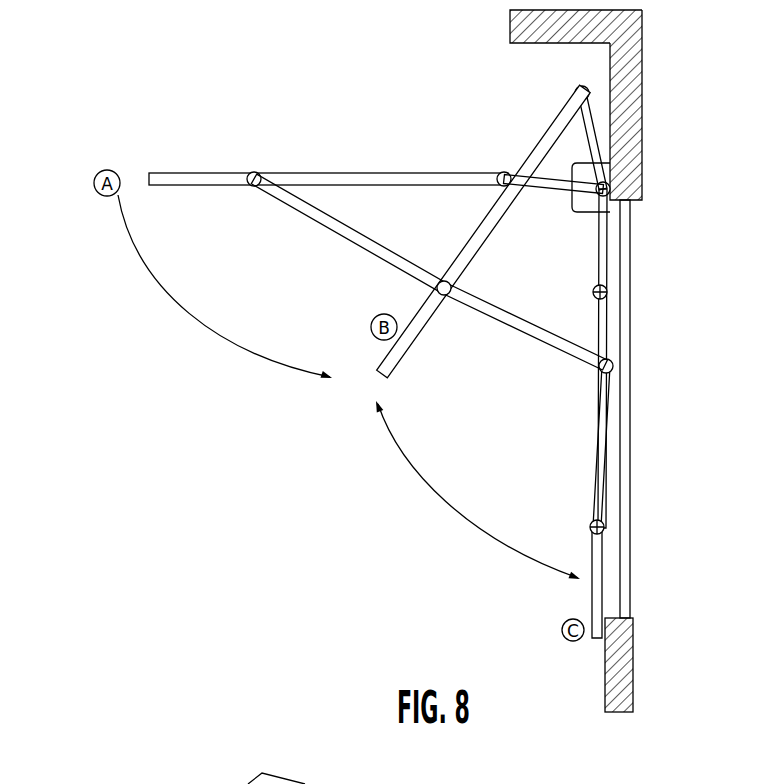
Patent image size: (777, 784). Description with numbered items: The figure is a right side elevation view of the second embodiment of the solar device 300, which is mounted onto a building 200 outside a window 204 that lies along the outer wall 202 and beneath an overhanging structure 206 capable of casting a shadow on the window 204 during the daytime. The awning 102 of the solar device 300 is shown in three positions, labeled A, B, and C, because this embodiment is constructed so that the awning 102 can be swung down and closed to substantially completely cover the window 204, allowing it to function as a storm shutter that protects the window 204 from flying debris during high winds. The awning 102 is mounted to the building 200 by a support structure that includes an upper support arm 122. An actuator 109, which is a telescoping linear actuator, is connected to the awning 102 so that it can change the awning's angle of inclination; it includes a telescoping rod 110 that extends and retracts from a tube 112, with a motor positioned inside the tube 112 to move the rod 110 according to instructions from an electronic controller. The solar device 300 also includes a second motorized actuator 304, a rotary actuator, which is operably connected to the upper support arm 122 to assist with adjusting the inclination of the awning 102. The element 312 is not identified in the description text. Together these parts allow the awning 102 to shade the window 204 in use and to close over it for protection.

The solar device 300 is at (142, 106).
The awning 102 is at (138, 156).
The overhanging structure 206 is at (546, 50).
The building 200 is at (636, 66).
The slider bar 312 is at (549, 170).
The second motorized actuator 304 is at (590, 164).
The telescoping rod 110 is at (366, 238).
The upper support arm 122 is at (547, 187).
The actuator 109 is at (418, 283).
The tube 112 is at (472, 294).
The window 204 is at (632, 426).
The outer wall 202 is at (606, 681).